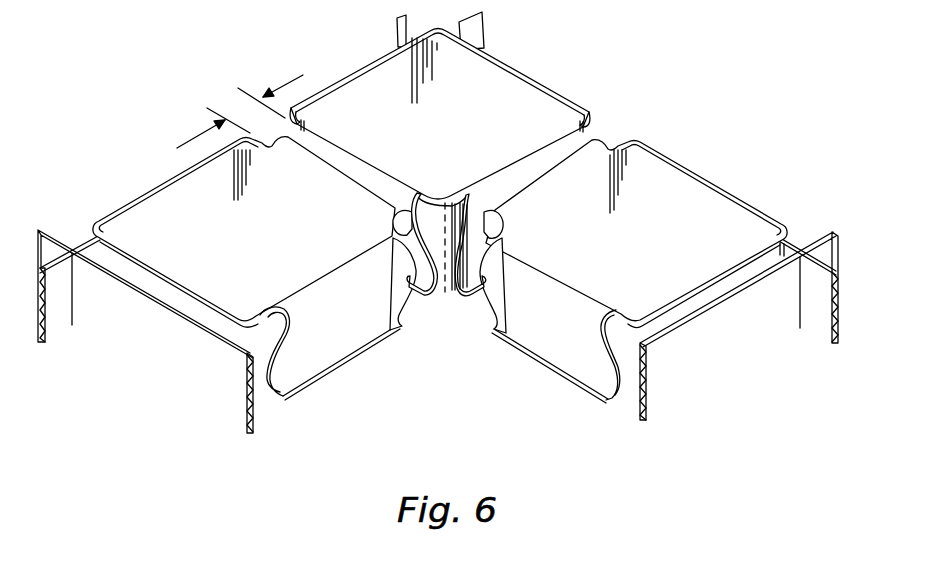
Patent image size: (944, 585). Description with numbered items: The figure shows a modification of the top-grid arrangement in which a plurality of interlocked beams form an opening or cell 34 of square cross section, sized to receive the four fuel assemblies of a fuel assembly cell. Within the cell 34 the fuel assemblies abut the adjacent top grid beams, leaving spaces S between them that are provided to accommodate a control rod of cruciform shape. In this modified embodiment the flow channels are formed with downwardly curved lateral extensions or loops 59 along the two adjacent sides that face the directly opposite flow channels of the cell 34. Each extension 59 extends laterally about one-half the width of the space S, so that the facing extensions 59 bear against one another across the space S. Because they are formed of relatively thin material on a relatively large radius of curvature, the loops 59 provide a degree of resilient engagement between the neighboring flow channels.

The cell 34 is at (438, 201).
The lateral extension or loop 59 is at (247, 373).
The space S is at (240, 111).